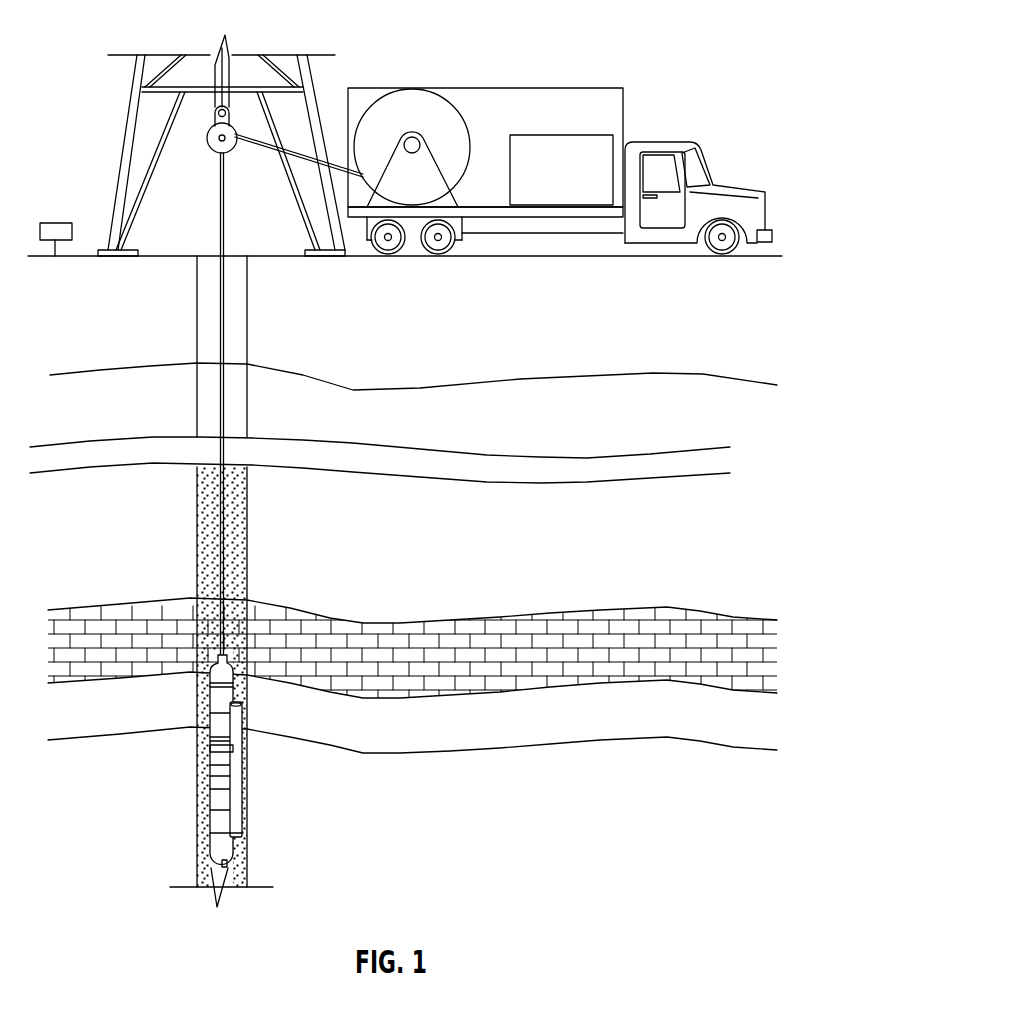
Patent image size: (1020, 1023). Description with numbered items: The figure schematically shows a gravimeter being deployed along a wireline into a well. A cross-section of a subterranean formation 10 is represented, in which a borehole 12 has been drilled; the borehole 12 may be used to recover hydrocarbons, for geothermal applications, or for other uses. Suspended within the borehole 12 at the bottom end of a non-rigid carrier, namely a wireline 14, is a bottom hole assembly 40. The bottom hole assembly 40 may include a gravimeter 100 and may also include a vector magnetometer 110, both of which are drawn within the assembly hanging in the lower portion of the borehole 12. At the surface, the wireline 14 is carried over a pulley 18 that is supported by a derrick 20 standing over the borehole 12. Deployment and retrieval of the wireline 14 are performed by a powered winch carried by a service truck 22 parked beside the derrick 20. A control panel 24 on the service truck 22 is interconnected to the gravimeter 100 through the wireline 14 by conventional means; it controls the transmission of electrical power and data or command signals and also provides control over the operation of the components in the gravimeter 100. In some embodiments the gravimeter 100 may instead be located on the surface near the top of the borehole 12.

The subterranean formation 10 is at (541, 434).
The borehole 12 is at (197, 423).
The wireline 14 is at (225, 423).
The pulley 18 is at (215, 155).
The derrick 20 is at (118, 153).
The service truck 22 is at (485, 88).
The control panel 24 is at (560, 135).
The bottom hole assembly 40 is at (229, 761).
The gravimeter 100 is at (223, 785).
The vector magnetometer 110 is at (223, 748).